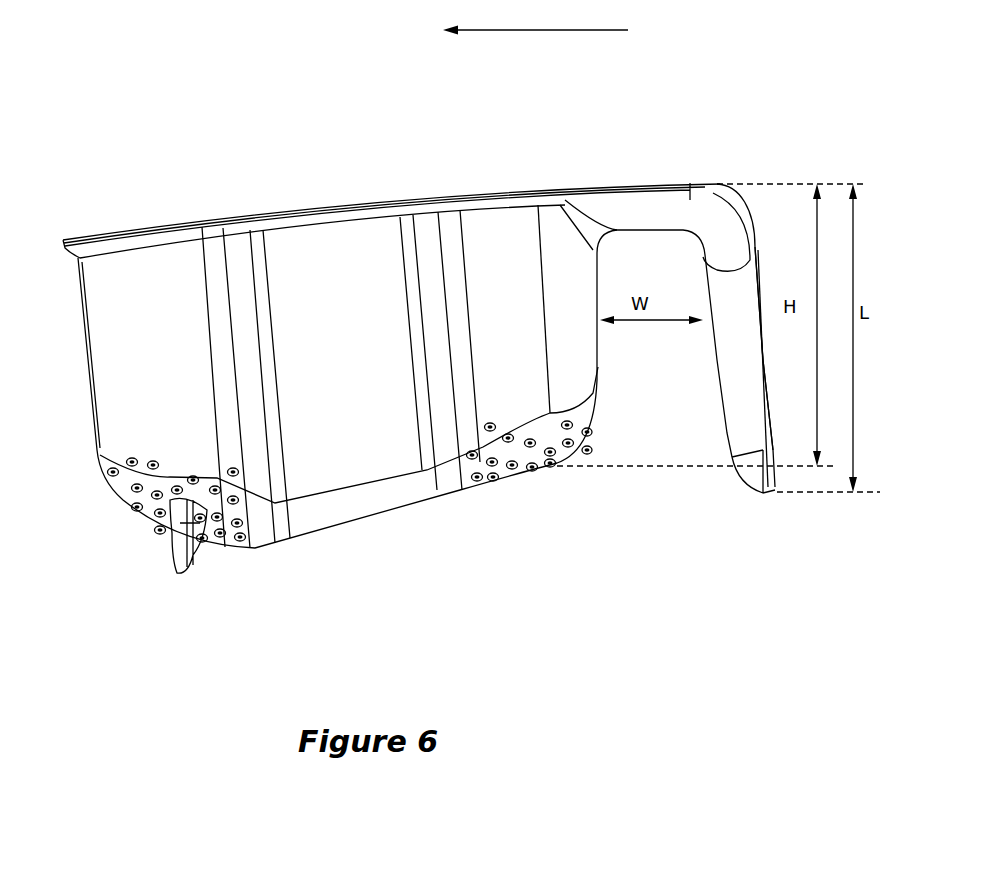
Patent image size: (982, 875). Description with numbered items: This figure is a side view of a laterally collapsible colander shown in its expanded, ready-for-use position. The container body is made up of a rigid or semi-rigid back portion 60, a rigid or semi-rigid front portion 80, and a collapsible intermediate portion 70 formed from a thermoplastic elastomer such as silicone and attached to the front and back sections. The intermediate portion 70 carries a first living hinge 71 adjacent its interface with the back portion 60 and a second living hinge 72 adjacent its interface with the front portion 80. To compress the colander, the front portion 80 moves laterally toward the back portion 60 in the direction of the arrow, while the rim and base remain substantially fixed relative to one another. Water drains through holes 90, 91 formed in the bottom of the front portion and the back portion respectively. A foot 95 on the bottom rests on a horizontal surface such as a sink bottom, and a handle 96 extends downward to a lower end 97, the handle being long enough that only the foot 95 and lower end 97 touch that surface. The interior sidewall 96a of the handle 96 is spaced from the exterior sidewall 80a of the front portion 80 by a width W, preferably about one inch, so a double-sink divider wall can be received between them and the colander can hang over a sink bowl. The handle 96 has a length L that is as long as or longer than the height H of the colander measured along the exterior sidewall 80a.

The back portion 60 is at (100, 222).
The collapsible intermediate portion 70 is at (317, 470).
The first living hinge 71 is at (258, 237).
The second living hinge 72 is at (421, 228).
The front portion 80 is at (513, 215).
The exterior sidewall 80a is at (597, 353).
The holes 90 is at (507, 458).
The holes 91 is at (133, 510).
The foot 95 is at (173, 567).
The handle 96 is at (727, 333).
The interior sidewall 96a is at (717, 395).
The lower end 97 is at (737, 473).